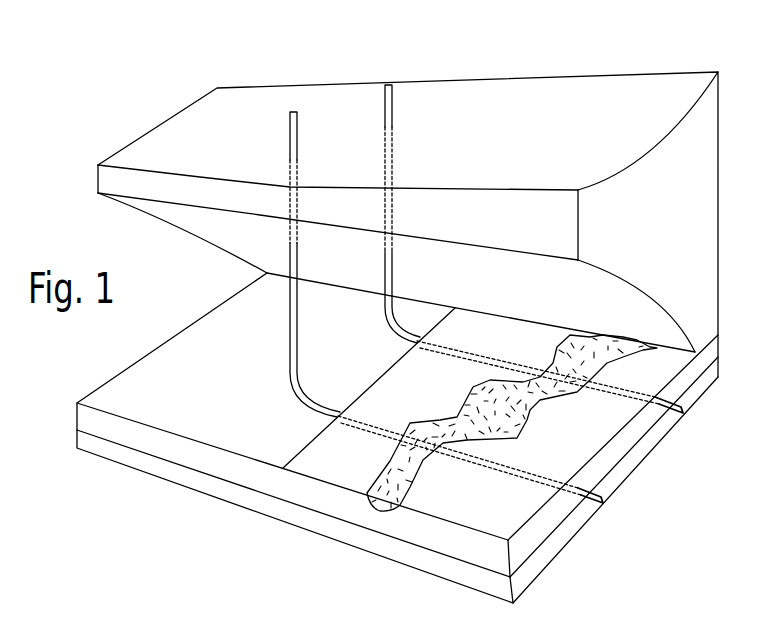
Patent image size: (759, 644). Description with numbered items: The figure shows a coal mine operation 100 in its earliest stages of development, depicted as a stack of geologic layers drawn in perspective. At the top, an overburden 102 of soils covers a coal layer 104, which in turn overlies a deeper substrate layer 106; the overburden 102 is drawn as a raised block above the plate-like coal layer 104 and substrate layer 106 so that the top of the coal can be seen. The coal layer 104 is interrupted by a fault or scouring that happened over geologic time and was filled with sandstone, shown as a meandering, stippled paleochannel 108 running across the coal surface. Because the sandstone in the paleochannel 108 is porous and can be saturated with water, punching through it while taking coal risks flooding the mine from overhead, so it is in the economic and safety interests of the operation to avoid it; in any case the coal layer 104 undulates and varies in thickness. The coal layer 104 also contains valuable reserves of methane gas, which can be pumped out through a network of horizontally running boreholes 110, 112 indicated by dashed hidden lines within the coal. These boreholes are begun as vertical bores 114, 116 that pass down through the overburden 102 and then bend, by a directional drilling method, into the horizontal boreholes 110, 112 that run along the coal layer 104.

The coal mine operation 100 is at (324, 54).
The overburden 102 is at (98, 184).
The coal layer 104 is at (76, 406).
The substrate layer 106 is at (76, 446).
The paleochannel 108 is at (362, 496).
The horizontally running borehole 110 is at (683, 407).
The horizontally running borehole 112 is at (603, 499).
The vertical bore 114 is at (385, 101).
The vertical bore 116 is at (289, 120).